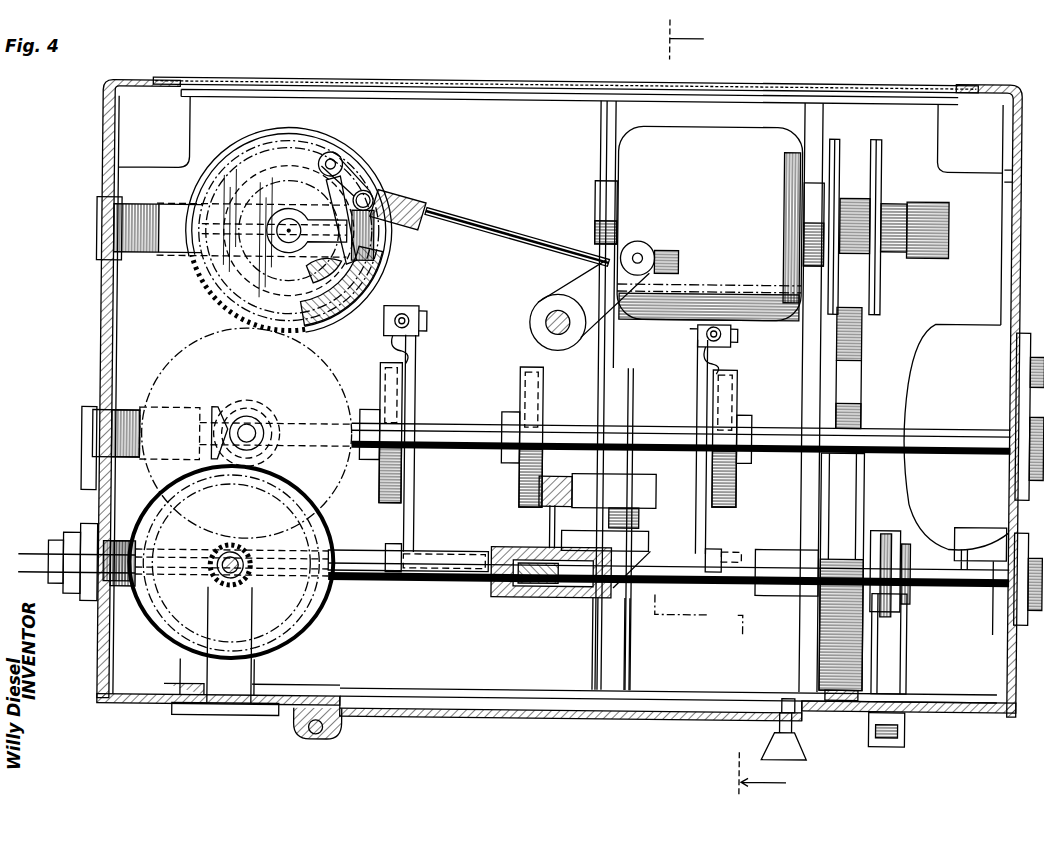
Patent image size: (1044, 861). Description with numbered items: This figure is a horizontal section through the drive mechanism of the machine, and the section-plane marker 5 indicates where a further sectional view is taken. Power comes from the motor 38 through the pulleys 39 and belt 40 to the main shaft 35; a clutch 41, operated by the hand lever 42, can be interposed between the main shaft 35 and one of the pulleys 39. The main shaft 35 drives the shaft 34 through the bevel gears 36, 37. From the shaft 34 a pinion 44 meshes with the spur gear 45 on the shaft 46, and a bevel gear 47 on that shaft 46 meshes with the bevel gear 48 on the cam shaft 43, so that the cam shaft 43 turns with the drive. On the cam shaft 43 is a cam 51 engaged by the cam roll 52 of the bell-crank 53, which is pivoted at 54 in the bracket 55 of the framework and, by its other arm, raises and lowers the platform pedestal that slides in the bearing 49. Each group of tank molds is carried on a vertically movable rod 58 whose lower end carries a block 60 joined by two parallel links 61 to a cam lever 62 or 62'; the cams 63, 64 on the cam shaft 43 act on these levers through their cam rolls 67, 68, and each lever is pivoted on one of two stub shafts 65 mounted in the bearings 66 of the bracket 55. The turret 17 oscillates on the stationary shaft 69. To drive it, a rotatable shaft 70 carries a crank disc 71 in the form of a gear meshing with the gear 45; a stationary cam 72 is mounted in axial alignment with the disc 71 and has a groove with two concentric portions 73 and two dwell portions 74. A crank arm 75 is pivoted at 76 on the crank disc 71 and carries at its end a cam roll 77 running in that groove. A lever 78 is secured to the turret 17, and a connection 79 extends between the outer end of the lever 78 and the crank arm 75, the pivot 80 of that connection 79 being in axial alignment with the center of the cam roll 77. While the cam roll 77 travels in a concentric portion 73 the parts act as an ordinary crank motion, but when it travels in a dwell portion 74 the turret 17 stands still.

The turret 17 is at (551, 281).
The shaft 34 is at (236, 588).
The main shaft 35 is at (350, 585).
The bevel gear 36 is at (150, 620).
The bevel gear 37 is at (298, 645).
The motor 38 is at (710, 223).
The pulleys 39 is at (879, 180).
The belt 40 is at (862, 340).
The clutch 41 is at (905, 590).
The hand lever 42 is at (910, 737).
The cam shaft 43 is at (470, 430).
The pinion 44 is at (250, 586).
The spur gear 45 is at (226, 536).
The shaft 46 is at (258, 428).
The bevel gear 47 is at (246, 412).
The bevel gear 48 is at (216, 410).
The bearing 49 is at (506, 549).
The cam 51 is at (540, 410).
The cam roll 52 is at (512, 475).
The bell-crank 53 is at (550, 527).
The pivot 54 is at (657, 491).
The bracket 55 is at (641, 520).
The rod 58 is at (428, 337).
The block 60 is at (410, 314).
The parallel links 61 is at (428, 319).
The cam lever 62 is at (426, 443).
The cam lever 62' is at (678, 446).
The cam 63 is at (370, 500).
The cam 64 is at (738, 497).
The stub shafts 65 is at (458, 550).
The bearings 66 is at (455, 585).
The cam roll 67 is at (404, 420).
The cam roll 68 is at (722, 432).
The stationary shaft 69 is at (545, 318).
The rotatable shaft 70 is at (286, 222).
The crank disc 71 is at (200, 283).
The stationary cam 72 is at (346, 308).
The concentric portions 73 is at (282, 147).
The dwell portions 74 is at (200, 203).
The crank arm 75 is at (372, 178).
The pivot 76 is at (332, 154).
The cam roll 77 is at (372, 200).
The lever 78 is at (594, 298).
The connection 79 is at (500, 222).
The pivot 80 is at (398, 206).
The section line 5 is at (718, 406).